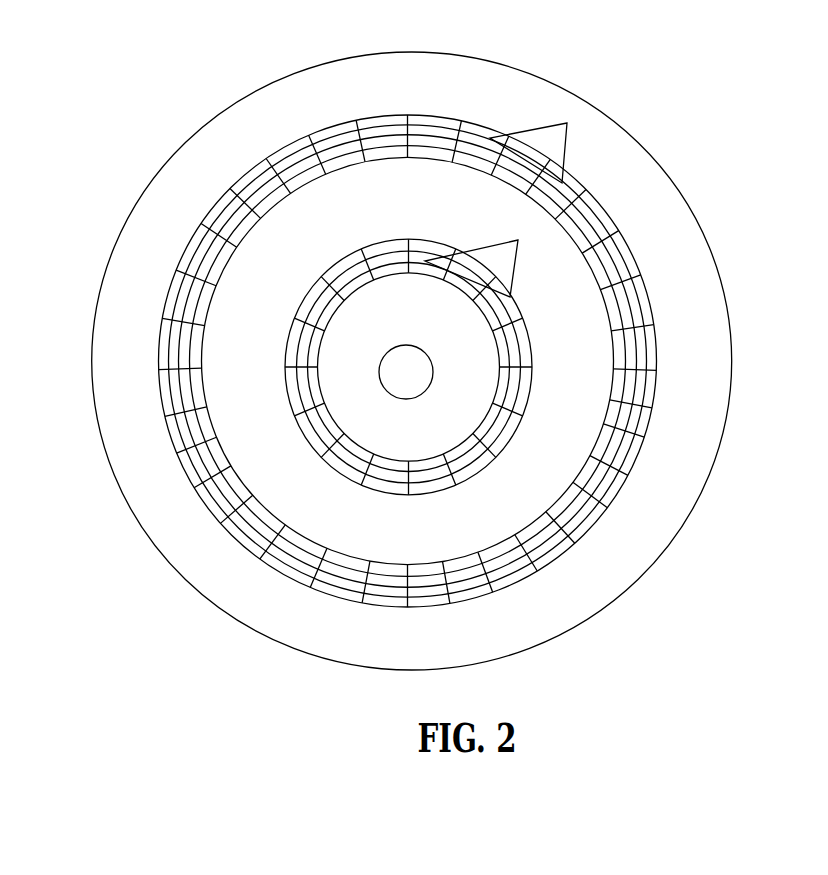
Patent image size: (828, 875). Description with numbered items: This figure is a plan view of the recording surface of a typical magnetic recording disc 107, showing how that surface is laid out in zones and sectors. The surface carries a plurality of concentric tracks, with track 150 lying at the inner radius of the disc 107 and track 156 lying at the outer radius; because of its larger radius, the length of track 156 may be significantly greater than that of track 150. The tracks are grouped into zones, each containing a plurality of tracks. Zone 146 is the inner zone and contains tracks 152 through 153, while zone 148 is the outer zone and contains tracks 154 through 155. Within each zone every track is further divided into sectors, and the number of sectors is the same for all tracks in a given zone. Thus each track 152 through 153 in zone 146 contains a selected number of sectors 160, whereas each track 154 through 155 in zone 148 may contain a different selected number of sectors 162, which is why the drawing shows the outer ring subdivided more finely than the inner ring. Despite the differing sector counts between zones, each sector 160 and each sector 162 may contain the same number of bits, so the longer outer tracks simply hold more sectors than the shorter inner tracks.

The magnetic recording disc 107 is at (172, 145).
The track at outer radius 156 is at (320, 65).
The track 155 is at (283, 147).
The track 154 is at (233, 228).
The zone 148 is at (146, 362).
The sectors 162 is at (567, 123).
The zone 146 is at (277, 346).
The track 152 is at (318, 402).
The track 153 is at (305, 438).
The sectors 160 is at (518, 240).
The track at inner radius 150 is at (433, 387).